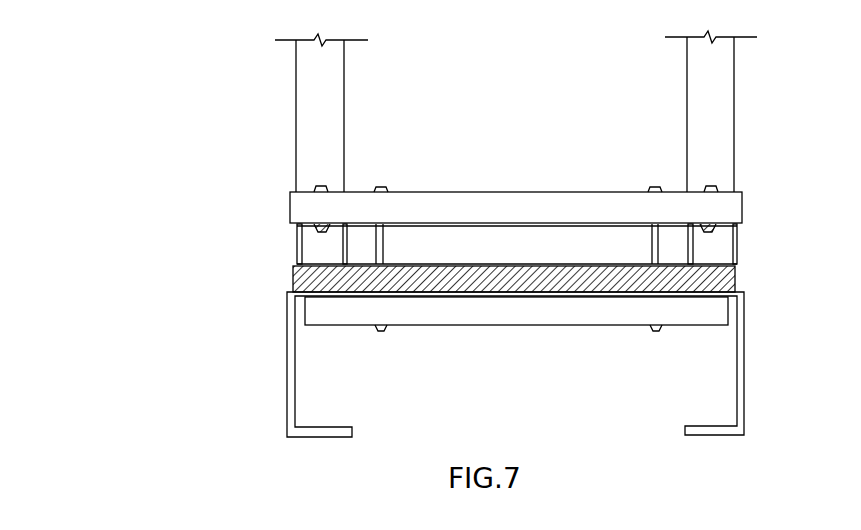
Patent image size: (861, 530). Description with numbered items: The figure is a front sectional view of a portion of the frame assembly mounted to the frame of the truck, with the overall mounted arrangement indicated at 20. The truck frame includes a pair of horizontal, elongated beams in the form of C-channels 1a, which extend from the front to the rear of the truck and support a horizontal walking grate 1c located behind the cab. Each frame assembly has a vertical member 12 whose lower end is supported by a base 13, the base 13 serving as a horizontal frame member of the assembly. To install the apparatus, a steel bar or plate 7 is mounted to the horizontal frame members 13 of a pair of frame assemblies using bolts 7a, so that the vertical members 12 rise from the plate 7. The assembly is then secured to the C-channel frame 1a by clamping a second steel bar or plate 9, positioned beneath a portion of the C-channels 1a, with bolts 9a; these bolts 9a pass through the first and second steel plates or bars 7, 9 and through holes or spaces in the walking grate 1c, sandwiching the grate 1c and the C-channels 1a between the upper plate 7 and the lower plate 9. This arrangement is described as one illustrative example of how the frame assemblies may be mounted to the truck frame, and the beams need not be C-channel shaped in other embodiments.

The structure assembly 20 is at (822, 16).
The vertical member 12 is at (336, 84).
The steel bar or plate 7 is at (750, 196).
The bolts 7a is at (330, 190).
The bolts 9a is at (384, 190).
The base 13 is at (298, 246).
The walking grate 1c is at (735, 269).
The C-channels 1a is at (290, 364).
The second steel bar or plate 9 is at (568, 311).